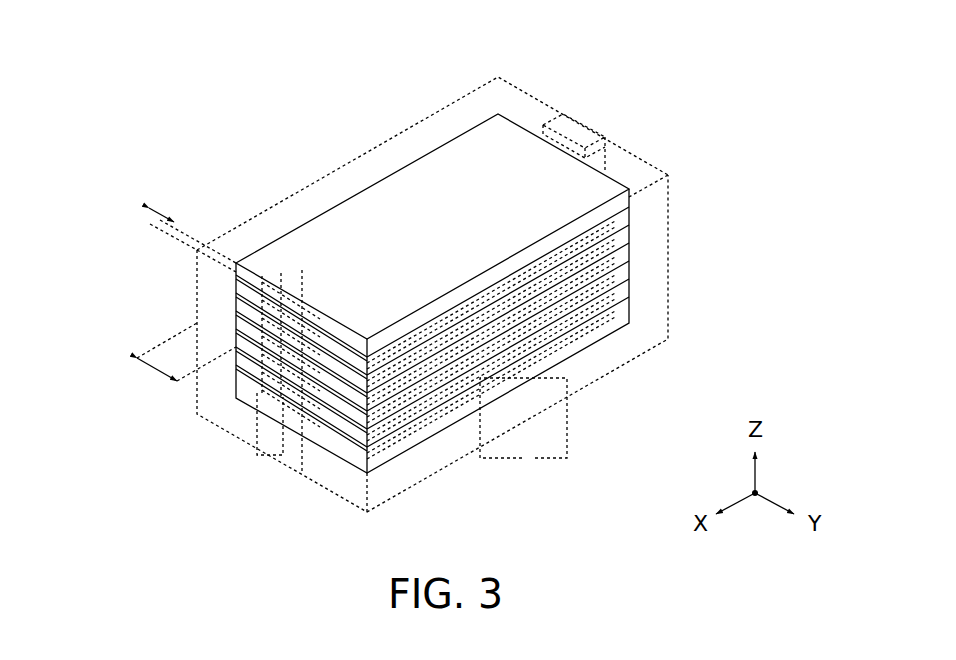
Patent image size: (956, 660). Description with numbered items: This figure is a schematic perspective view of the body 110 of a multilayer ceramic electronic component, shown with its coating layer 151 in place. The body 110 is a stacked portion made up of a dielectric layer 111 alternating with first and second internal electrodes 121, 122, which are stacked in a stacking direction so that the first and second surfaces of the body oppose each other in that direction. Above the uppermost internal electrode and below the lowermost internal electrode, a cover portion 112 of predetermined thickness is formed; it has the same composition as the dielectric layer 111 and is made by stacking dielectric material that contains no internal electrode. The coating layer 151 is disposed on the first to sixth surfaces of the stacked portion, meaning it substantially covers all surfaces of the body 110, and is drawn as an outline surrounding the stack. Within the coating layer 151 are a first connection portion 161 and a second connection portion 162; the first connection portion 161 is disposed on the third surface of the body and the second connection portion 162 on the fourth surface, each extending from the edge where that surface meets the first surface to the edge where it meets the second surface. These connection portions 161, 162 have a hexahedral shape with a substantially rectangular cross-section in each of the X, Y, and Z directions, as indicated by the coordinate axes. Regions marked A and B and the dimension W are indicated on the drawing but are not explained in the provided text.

The body 110 is at (277, 52).
The dielectric layer 111 is at (629, 257).
The cover portion 112 is at (630, 205).
The first internal electrode 121 is at (629, 224).
The second internal electrode 122 is at (629, 287).
The coating layer 151 is at (330, 175).
The first connection portion 161 is at (302, 473).
The second connection portion 162 is at (563, 114).
The region A is at (527, 459).
The region B is at (255, 423).
The width W is at (186, 301).